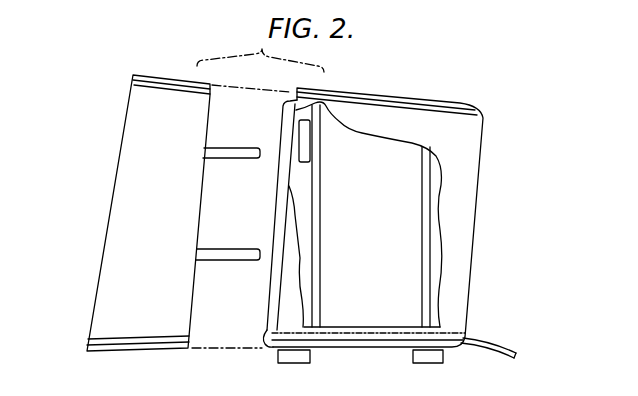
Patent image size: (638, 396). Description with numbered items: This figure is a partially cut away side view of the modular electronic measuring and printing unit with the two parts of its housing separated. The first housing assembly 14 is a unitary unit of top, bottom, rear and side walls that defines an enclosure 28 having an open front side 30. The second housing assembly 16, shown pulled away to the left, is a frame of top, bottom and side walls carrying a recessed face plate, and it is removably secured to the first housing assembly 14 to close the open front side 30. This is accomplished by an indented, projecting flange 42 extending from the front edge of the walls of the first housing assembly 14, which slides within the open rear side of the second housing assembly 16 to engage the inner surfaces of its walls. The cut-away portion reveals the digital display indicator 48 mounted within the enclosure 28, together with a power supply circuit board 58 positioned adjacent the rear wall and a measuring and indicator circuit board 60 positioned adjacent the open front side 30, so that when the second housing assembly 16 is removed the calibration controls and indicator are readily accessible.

The first housing assembly 14 is at (453, 138).
The second housing assembly 16 is at (158, 235).
The enclosure 28 is at (352, 134).
The open front side 30 is at (268, 335).
The indented, projecting flange 42 is at (285, 117).
The digital display indicator 48 is at (306, 147).
The power supply circuit board 58 is at (424, 215).
The measuring and indicator circuit board 60 is at (317, 265).